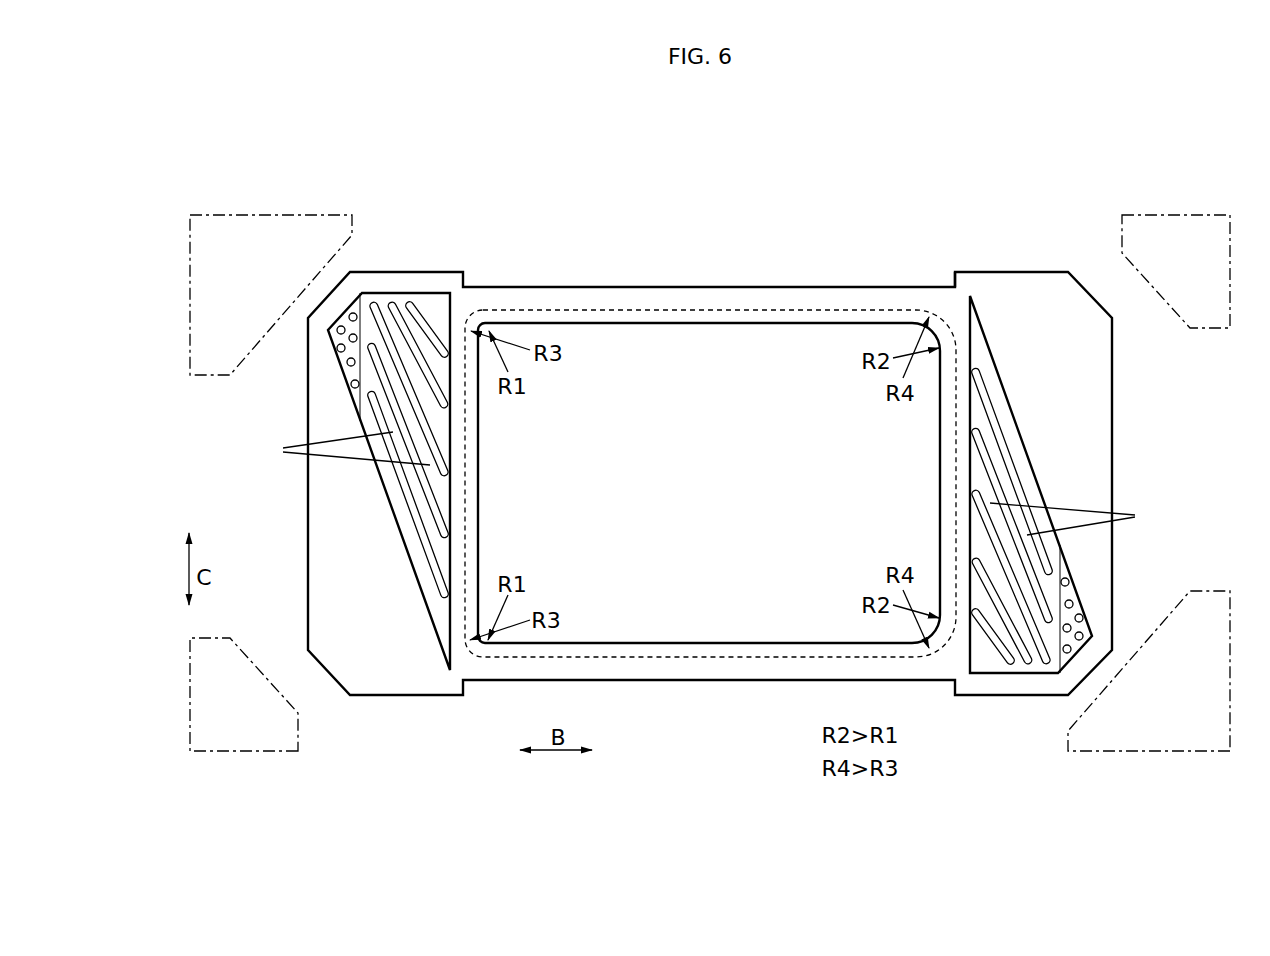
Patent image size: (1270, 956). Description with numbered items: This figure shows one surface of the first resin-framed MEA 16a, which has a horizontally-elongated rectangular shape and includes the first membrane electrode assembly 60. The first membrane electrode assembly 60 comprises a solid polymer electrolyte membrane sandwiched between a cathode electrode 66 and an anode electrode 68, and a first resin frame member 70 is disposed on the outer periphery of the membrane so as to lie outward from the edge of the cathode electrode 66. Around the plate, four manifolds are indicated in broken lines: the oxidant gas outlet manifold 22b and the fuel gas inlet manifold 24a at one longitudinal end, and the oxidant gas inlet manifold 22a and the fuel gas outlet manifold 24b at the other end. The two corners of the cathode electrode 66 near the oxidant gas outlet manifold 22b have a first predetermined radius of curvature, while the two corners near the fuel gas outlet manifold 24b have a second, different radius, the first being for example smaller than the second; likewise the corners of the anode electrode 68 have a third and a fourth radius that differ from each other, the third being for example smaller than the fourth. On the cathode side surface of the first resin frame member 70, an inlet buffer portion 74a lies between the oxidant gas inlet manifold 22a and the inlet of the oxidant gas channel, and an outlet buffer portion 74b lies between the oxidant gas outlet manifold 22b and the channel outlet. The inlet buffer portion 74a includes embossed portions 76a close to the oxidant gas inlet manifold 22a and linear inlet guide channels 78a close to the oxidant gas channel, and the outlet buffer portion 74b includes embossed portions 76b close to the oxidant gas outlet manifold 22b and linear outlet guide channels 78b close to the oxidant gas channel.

The first resin-framed MEA 16a is at (434, 173).
The oxidant gas outlet manifold 22b is at (233, 238).
The fuel gas outlet manifold 24b is at (1145, 235).
The oxidant gas inlet manifold 22a is at (1167, 733).
The fuel gas inlet manifold 24a is at (250, 733).
The first membrane electrode assembly 60 is at (700, 322).
The cathode electrode 66 is at (636, 375).
The anode electrode 68 is at (581, 314).
The first resin frame member 70 is at (972, 272).
The inlet buffer portion 74a is at (1020, 678).
The outlet buffer portion 74b is at (401, 290).
The embossed portions 76a is at (1070, 603).
The embossed portions 76b is at (350, 364).
The linear inlet guide channels 78a is at (1089, 519).
The linear outlet guide channels 78b is at (332, 448).